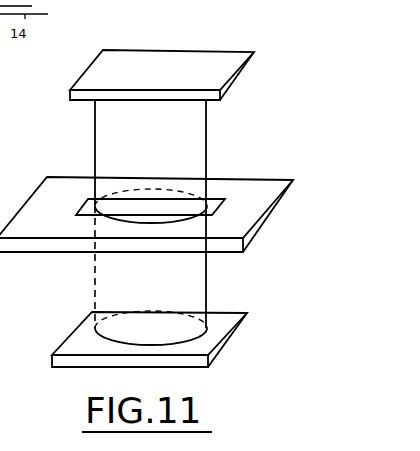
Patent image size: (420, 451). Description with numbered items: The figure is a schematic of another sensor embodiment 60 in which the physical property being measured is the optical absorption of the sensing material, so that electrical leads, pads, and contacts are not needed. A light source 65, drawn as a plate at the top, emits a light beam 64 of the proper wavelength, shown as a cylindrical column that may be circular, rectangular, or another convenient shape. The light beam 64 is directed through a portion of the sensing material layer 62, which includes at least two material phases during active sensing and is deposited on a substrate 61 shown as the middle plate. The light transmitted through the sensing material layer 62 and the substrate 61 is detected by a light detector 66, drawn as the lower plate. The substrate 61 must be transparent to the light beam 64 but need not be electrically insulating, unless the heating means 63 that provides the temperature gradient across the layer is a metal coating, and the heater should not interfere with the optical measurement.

The embodiment 60 is at (276, 62).
The substrate 61 is at (266, 221).
The sensing material layer 62 is at (215, 200).
The heating means 63 is at (61, 254).
The light beam 64 is at (96, 125).
The light source 65 is at (155, 70).
The light detector 66 is at (69, 367).